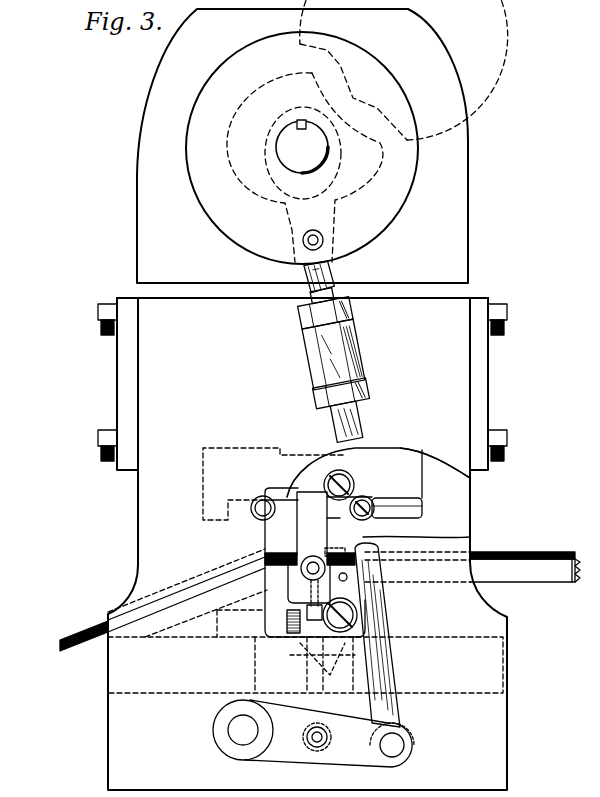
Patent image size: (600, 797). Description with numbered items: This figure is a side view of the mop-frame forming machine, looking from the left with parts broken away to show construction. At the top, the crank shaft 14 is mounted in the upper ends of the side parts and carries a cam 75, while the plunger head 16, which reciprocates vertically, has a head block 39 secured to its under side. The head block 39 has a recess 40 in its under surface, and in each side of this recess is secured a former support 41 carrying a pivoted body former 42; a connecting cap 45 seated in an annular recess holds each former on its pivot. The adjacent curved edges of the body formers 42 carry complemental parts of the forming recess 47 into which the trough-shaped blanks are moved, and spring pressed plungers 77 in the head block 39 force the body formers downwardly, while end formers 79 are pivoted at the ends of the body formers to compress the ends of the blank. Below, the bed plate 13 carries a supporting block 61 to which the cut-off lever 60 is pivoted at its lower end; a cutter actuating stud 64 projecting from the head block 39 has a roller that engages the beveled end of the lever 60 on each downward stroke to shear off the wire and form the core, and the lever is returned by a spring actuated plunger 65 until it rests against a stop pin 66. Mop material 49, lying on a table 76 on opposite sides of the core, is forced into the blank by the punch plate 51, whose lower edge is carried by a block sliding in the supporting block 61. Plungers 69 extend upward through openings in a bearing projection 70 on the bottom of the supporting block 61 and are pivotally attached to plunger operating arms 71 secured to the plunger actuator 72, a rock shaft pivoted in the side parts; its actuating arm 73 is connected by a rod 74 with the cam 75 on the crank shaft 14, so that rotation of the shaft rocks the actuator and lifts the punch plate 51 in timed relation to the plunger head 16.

The bed plate 13 is at (505, 668).
The crank shaft 14 is at (286, 143).
The plunger head 16 is at (384, 452).
The head block 39 is at (421, 462).
The recess 40 is at (395, 513).
The former support 41 is at (392, 507).
The body former 42 is at (363, 498).
The connecting cap 45 is at (370, 500).
The forming recess 47 is at (328, 524).
The mop material 49 is at (516, 548).
The punch plate 51 is at (311, 593).
The cut-off lever 60 is at (268, 541).
The supporting block 61 is at (275, 620).
The cutter actuating stud 64 is at (345, 479).
The spring actuated plunger 65 is at (292, 640).
The stop pin 66 is at (350, 579).
The plungers 69 is at (303, 683).
The bearing projection 70 is at (447, 269).
The plunger operating arms 71 is at (318, 752).
The plunger actuator 72 is at (237, 734).
The actuating arm 73 is at (406, 752).
The rod 74 is at (391, 666).
The cam 75 is at (207, 219).
The table 76 is at (557, 573).
The spring pressed plungers 77 is at (297, 497).
The end formers 79 is at (254, 514).